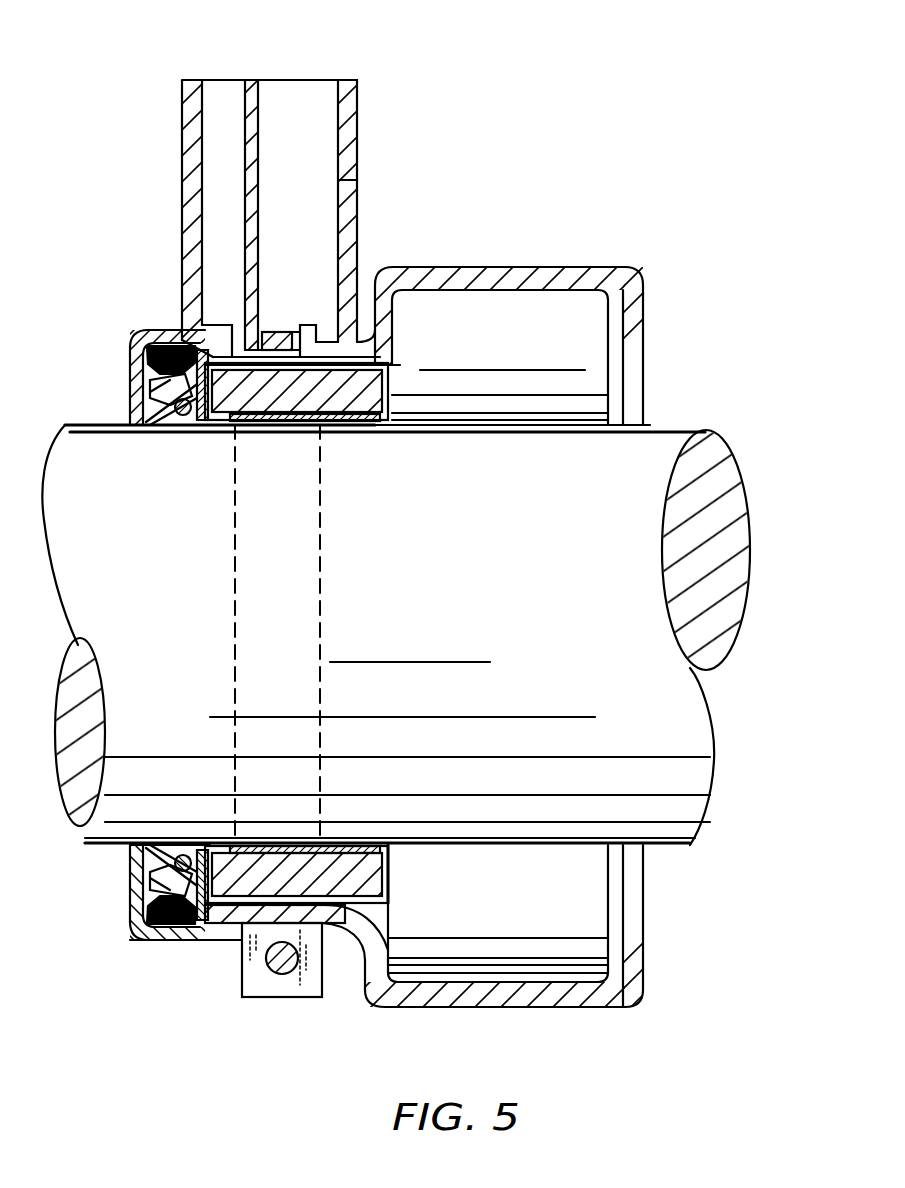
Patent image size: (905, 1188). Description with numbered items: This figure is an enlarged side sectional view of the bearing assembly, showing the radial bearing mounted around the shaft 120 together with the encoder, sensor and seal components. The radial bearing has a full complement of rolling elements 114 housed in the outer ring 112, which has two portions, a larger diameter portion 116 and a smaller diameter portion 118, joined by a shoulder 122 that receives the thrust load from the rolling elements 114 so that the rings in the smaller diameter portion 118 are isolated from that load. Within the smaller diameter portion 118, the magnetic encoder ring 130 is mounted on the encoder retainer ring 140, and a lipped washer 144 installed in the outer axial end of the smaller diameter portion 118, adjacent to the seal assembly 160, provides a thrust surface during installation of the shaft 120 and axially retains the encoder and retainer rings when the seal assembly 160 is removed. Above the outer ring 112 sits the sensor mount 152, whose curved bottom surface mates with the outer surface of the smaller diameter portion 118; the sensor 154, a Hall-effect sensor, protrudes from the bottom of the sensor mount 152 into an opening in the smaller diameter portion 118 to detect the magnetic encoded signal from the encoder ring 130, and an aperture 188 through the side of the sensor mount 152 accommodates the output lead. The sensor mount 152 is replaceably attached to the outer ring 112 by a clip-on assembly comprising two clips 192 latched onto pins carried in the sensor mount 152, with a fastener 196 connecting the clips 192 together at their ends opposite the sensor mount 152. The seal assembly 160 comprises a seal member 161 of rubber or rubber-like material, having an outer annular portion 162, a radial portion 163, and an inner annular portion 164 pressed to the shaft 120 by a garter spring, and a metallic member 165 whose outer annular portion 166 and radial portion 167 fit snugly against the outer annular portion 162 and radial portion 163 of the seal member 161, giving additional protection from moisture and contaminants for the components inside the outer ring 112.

The outer ring 112 is at (570, 1026).
The rolling elements 114 is at (526, 331).
The larger diameter portion 116 is at (567, 270).
The smaller diameter portion 118 is at (243, 930).
The shaft 120 is at (547, 583).
The shoulder 122 is at (395, 937).
The magnetic encoder ring 130 is at (383, 382).
The encoder retainer ring 140 is at (345, 427).
The lipped washer 144 is at (150, 402).
The sensor mount 152 is at (183, 80).
The sensor 154 is at (268, 332).
The seal assembly 160 is at (127, 318).
The seal member 161 is at (140, 922).
The outer annular portion 162 is at (172, 334).
The radial portion 163 is at (140, 357).
The inner annular portion 164 is at (158, 432).
The metallic member 165 is at (118, 877).
The outer annular portion 166 is at (180, 944).
The radial portion 167 is at (156, 890).
The aperture 188 is at (355, 180).
The clips 192 is at (320, 575).
The fastener 196 is at (296, 980).